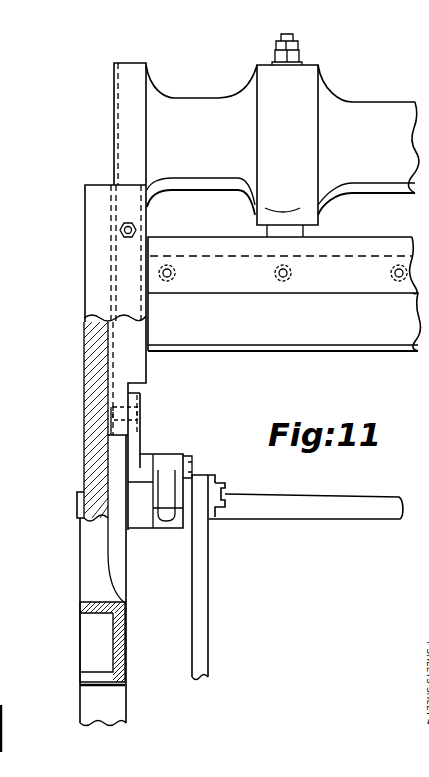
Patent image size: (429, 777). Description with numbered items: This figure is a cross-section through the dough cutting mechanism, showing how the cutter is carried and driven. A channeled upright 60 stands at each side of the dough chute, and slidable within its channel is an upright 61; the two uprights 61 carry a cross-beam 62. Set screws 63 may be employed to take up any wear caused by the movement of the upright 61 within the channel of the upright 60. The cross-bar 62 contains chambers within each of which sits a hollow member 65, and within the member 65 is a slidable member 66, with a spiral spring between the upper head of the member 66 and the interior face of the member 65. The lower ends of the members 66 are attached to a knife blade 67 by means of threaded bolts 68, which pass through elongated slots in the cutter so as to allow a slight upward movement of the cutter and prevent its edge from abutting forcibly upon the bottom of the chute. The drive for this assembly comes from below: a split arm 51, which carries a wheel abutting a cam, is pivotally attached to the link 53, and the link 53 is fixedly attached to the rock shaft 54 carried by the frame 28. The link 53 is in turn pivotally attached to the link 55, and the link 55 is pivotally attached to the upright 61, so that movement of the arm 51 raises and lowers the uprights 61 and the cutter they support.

The frame 28 is at (85, 646).
The split arm 51 is at (205, 583).
The link 53 is at (166, 498).
The rock shaft 54 is at (287, 497).
The link 55 is at (140, 437).
The channeled upright 60 is at (88, 266).
The upright 61 is at (118, 143).
The cross-beam 62 is at (359, 110).
The set screw 63 is at (120, 228).
The hollow member 65 is at (258, 77).
The slidable member 66 is at (290, 233).
The knife blade 67 is at (346, 308).
The threaded bolt 68 is at (172, 280).